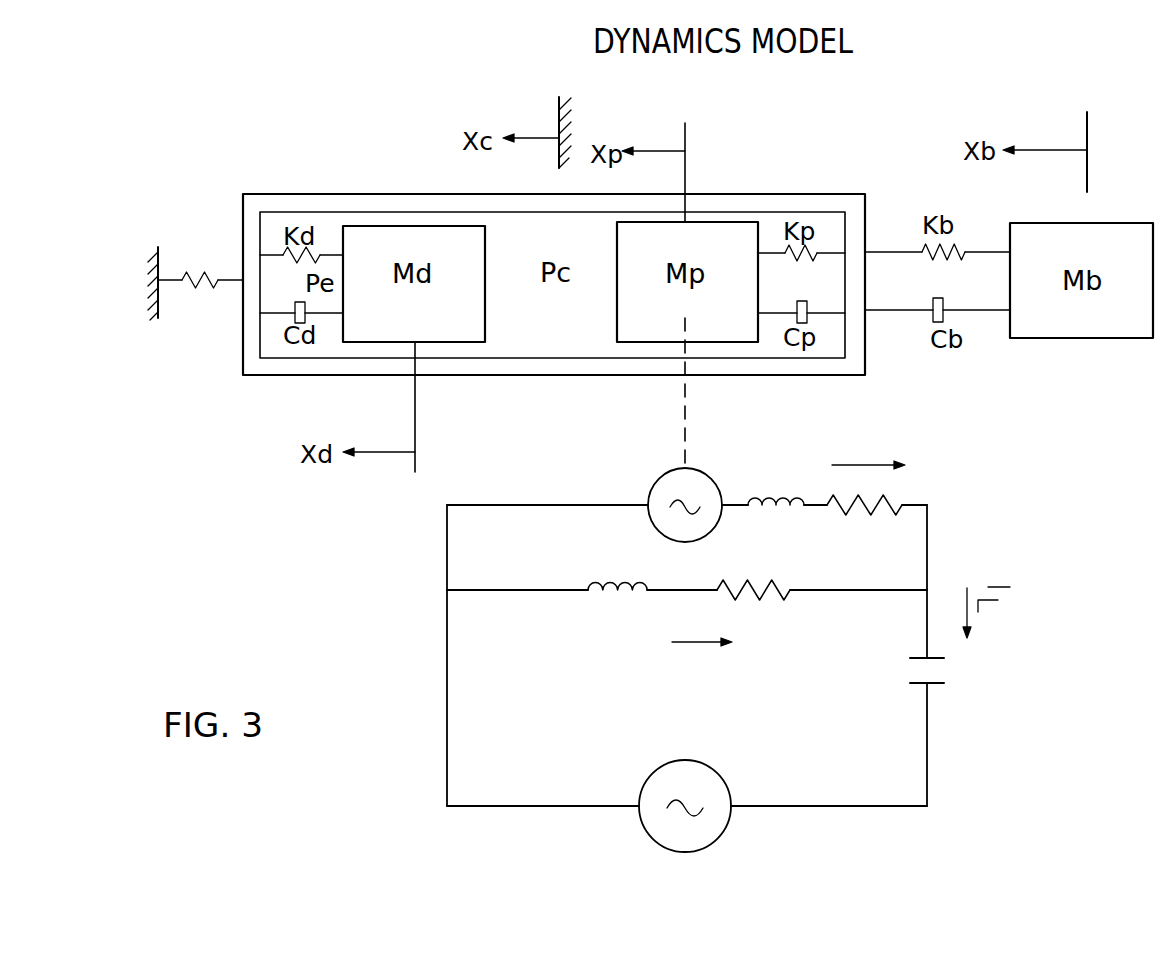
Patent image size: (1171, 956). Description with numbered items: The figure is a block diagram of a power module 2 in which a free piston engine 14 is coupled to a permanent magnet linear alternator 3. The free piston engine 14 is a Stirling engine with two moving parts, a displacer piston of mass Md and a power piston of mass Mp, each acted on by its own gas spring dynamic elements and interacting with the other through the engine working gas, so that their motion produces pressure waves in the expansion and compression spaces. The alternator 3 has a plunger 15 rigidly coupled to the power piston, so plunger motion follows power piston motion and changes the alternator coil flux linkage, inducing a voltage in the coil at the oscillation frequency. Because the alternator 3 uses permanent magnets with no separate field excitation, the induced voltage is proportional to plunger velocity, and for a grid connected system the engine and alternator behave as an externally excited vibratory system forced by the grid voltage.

The free piston engine 14 is at (786, 192).
The plunger 15 is at (687, 408).
The power module 2 is at (1056, 108).
The permanent magnet linear alternator 3 is at (928, 557).